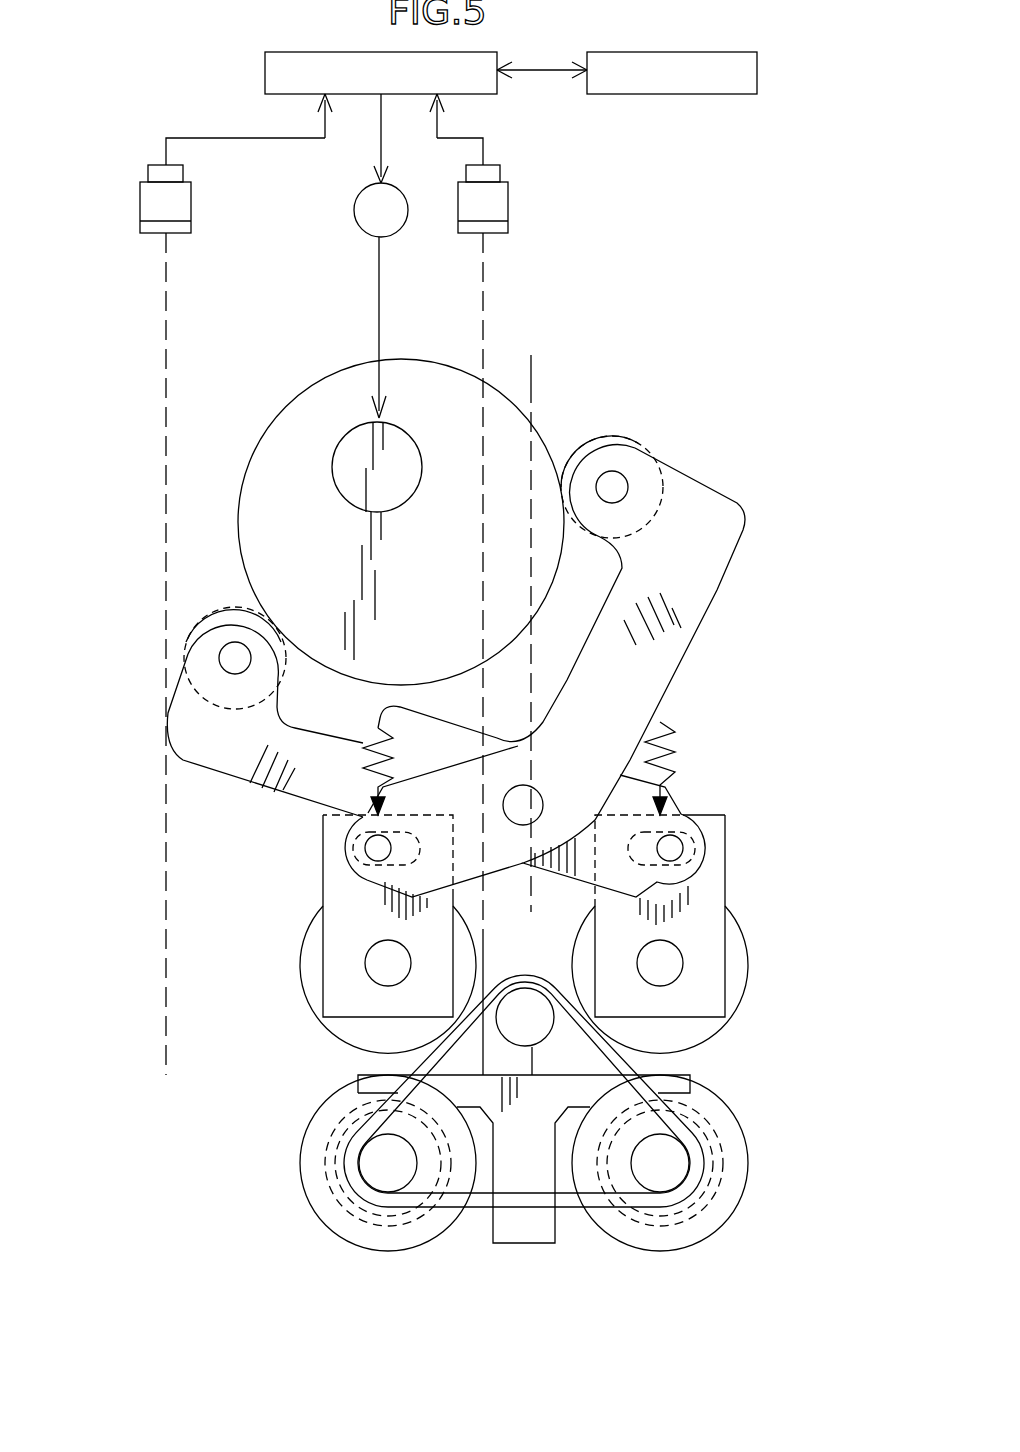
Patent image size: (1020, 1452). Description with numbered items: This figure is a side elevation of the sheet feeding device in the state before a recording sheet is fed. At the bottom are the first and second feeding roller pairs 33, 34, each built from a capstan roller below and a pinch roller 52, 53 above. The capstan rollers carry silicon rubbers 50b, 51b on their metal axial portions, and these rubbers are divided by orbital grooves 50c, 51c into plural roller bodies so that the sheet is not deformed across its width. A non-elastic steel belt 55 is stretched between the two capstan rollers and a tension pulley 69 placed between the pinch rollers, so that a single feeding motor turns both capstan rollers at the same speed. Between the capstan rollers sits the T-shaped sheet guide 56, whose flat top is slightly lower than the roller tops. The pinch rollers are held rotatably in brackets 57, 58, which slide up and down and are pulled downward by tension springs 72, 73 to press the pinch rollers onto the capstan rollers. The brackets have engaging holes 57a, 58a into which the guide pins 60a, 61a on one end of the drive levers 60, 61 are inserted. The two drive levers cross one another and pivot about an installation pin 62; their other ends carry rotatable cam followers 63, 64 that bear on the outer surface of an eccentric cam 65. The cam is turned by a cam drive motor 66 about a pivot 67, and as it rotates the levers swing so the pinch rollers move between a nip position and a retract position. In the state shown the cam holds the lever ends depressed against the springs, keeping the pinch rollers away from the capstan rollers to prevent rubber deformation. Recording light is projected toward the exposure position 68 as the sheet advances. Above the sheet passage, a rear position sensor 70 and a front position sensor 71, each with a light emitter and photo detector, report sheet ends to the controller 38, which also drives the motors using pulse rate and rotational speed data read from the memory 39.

The first feeding roller pair 33 is at (360, 1250).
The second feeding roller pair 34 is at (712, 1243).
The controller 38 is at (265, 70).
The memory 39 is at (709, 94).
The silicon rubber 50b is at (322, 1205).
The orbital grooves 50c is at (305, 1130).
The silicon rubber 51b is at (730, 1198).
The orbital grooves 51c is at (700, 1125).
The pinch roller 52 is at (310, 993).
The pinch roller 53 is at (745, 1005).
The belt 55 is at (480, 1205).
The sheet guide 56 is at (535, 1235).
The bracket 57 is at (322, 941).
The engaging hole 57a is at (348, 843).
The bracket 58 is at (726, 941).
The engaging hole 58a is at (695, 853).
The drive lever 60 is at (735, 563).
The guide pin 60a is at (372, 855).
The drive lever 61 is at (178, 762).
The guide pin 61a is at (675, 838).
The installation pin 62 is at (522, 800).
The cam follower 63 is at (630, 440).
The cam follower 64 is at (205, 640).
The eccentric cam 65 is at (273, 458).
The cam drive motor 66 is at (354, 210).
The pivot 67 is at (355, 448).
The exposure position 68 is at (535, 383).
The tension pulley 69 is at (525, 1000).
The rear position sensor 70 is at (140, 208).
The front position sensor 71 is at (499, 205).
The tension spring 72 is at (672, 752).
The tension spring 73 is at (370, 740).